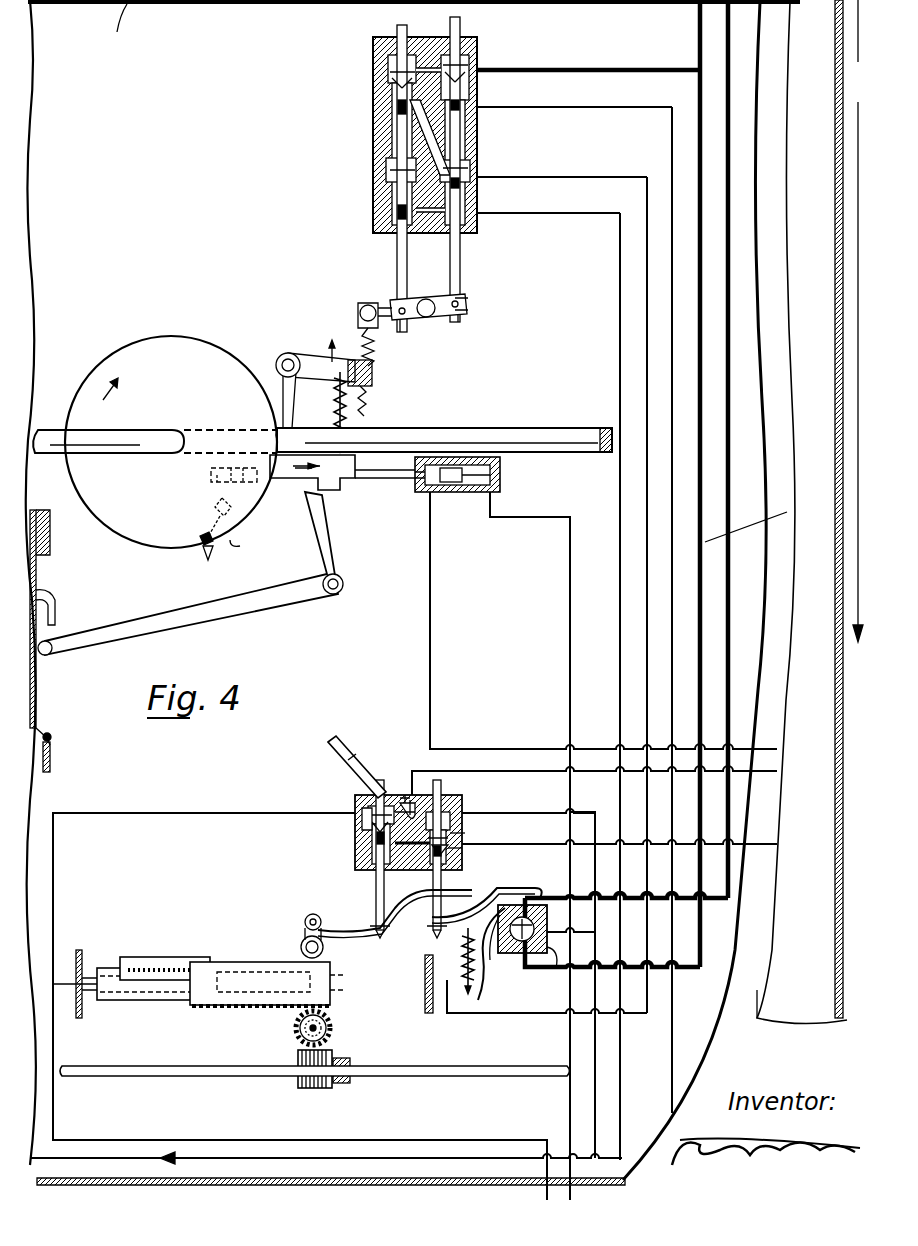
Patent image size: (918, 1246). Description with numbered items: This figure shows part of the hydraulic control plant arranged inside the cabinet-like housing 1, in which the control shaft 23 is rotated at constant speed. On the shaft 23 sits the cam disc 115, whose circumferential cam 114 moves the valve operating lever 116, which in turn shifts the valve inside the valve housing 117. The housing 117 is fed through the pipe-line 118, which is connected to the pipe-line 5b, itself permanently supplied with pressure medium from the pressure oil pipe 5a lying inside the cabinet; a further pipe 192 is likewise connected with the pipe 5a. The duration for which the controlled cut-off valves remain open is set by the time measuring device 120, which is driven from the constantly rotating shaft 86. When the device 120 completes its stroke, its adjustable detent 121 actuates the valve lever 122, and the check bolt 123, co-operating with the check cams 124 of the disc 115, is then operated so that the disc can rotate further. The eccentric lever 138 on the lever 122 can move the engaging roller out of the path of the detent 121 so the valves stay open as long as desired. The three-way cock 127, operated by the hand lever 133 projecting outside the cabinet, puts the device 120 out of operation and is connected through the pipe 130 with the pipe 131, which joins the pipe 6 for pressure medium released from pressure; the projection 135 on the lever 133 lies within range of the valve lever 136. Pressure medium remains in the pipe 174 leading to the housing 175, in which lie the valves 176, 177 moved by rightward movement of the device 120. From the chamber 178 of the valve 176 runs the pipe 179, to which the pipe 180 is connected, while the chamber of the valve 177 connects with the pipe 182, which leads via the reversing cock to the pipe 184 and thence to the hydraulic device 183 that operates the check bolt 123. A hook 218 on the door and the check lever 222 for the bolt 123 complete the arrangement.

The housing 1 is at (242, 4).
The pressure oil pipe 5a is at (111, 31).
The pipe-line 5b is at (760, 517).
The pipe for pressure medium released from pressure 6 is at (113, 1158).
The control shaft 23 is at (135, 447).
The shaft 86 is at (205, 1077).
The circumferential cam 114 is at (233, 542).
The cam disc 115 is at (163, 341).
The valve operating lever 116 is at (310, 362).
The valve housing 117 is at (373, 112).
The pipe-line 118 is at (192, 8).
The time measuring device 120 is at (252, 969).
The adjustable detent 121 is at (165, 960).
The valve lever 122 is at (346, 930).
The check bolt 123 is at (342, 485).
The check cams 124 is at (214, 567).
The three-way cock 127 is at (484, 962).
The pipe 130 is at (548, 972).
The pipe 131 is at (620, 300).
The hand lever 133 is at (341, 747).
The projection 135 is at (470, 987).
The valve lever 136 is at (527, 899).
The eccentric lever 138 is at (316, 926).
The pipe 174 is at (222, 815).
The housing 175 is at (465, 833).
The valve 176 is at (357, 845).
The valve 177 is at (480, 847).
The chamber 178 is at (357, 808).
The pipe 179 is at (401, 795).
The pipe 180 is at (777, 771).
The pipe 182 is at (777, 844).
The hydraulic device 183 is at (460, 492).
The pipe 184 is at (777, 749).
The pipe 192 is at (856, 633).
The hook 218 is at (57, 600).
The check lever 222 is at (252, 606).